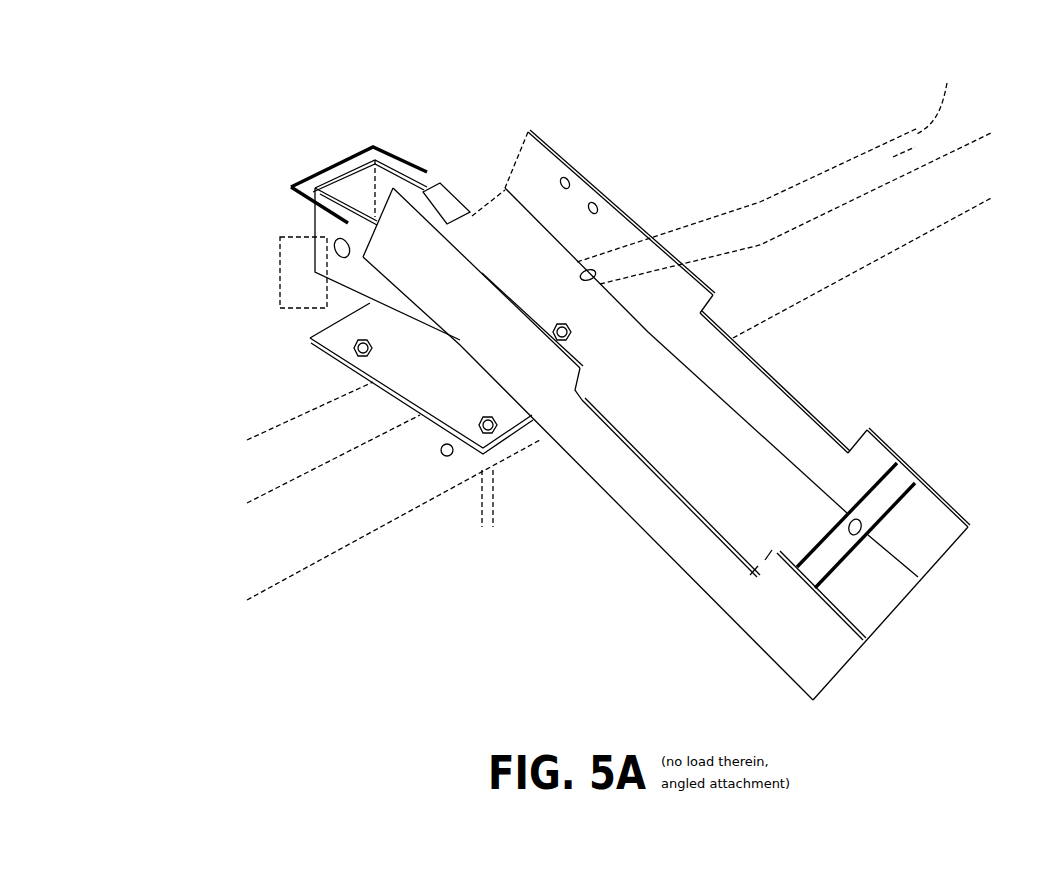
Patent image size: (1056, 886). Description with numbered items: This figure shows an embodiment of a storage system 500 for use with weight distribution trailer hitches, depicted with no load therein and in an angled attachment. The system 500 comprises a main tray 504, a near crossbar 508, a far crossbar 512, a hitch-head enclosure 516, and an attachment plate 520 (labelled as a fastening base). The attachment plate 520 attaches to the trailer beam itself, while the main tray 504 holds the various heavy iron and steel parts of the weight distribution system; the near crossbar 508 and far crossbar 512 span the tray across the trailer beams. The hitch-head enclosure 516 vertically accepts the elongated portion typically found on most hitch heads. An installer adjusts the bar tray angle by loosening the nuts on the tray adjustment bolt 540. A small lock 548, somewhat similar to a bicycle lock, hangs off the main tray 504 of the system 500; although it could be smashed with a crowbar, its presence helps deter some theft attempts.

The storage system 500 is at (590, 371).
The main tray 504 is at (713, 437).
The near crossbar 508 is at (633, 250).
The far crossbar 512 is at (887, 497).
The hitch-head enclosure 516 is at (340, 163).
The attachment plate 520 is at (392, 362).
The tray adjustment bolt 540 is at (558, 340).
The small lock 548 is at (293, 258).